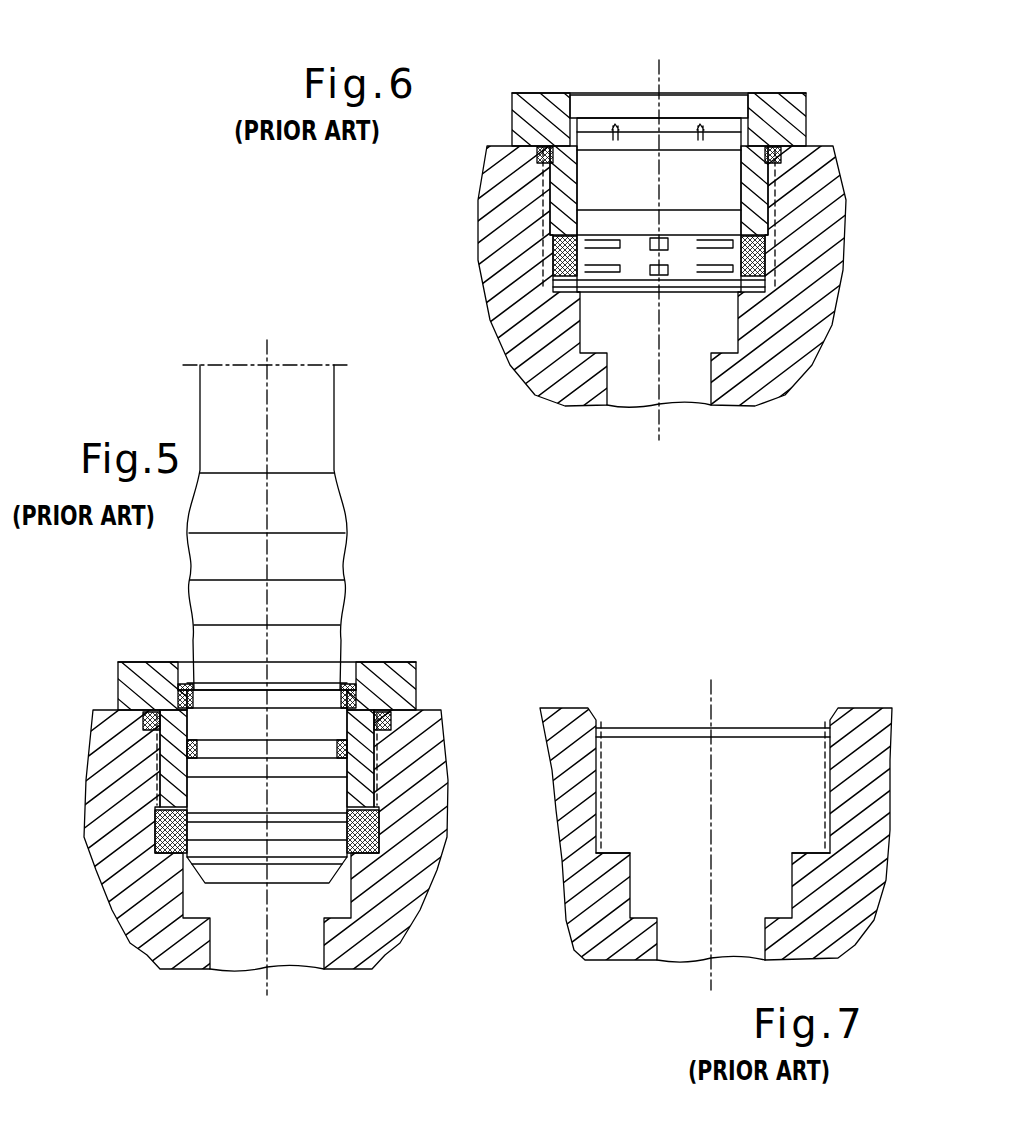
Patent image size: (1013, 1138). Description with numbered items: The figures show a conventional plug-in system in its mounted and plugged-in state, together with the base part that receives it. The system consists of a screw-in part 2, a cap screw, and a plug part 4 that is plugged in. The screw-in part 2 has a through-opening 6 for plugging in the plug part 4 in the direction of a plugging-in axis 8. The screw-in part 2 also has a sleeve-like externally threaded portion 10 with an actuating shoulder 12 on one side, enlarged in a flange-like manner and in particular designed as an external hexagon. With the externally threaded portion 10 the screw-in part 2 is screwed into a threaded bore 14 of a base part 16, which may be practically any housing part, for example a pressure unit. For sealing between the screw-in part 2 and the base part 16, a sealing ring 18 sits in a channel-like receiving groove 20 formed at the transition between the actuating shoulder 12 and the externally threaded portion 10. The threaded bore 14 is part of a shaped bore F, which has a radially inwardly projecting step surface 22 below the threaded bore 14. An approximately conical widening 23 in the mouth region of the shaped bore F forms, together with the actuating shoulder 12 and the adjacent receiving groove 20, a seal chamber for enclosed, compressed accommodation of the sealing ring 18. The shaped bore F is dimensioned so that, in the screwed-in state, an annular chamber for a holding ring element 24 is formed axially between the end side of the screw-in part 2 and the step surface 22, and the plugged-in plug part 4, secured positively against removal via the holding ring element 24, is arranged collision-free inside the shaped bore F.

In FIG. 6, the screw-in part 2 is at (510, 118).
In FIG. 5, the screw-in part 2 is at (409, 655).
In FIG. 5, the plug part 4 is at (212, 660).
In FIG. 6, the through-opening 6 is at (677, 173).
In FIG. 5, the through-opening 6 is at (330, 772).
In FIG. 6, the plugging-in axis 8 is at (663, 80).
In FIG. 5, the plugging-in axis 8 is at (273, 725).
In FIG. 7, the plugging-in axis 8 is at (708, 700).
In FIG. 6, the externally threaded portion 10 is at (533, 205).
In FIG. 5, the externally threaded portion 10 is at (130, 712).
In FIG. 6, the actuating shoulder 12 is at (790, 102).
In FIG. 5, the actuating shoulder 12 is at (405, 684).
In FIG. 6, the threaded bore 14 is at (783, 207).
In FIG. 5, the threaded bore 14 is at (140, 712).
In FIG. 7, the threaded bore 14 is at (600, 775).
In FIG. 6, the base part 16 is at (507, 357).
In FIG. 5, the base part 16 is at (400, 917).
In FIG. 7, the base part 16 is at (853, 709).
In FIG. 6, the sealing ring 18 is at (532, 98).
In FIG. 5, the sealing ring 18 is at (368, 698).
In FIG. 6, the receiving groove 20 is at (557, 142).
In FIG. 5, the receiving groove 20 is at (385, 698).
In FIG. 7, the step surface 22 is at (620, 840).
In FIG. 6, the conical widening 23 is at (537, 157).
In FIG. 5, the conical widening 23 is at (393, 722).
In FIG. 7, the conical widening 23 is at (830, 722).
In FIG. 6, the holding ring element 24 is at (547, 275).
In FIG. 5, the holding ring element 24 is at (373, 827).
In FIG. 6, the shaped bore F is at (713, 315).
In FIG. 5, the shaped bore F is at (307, 900).
In FIG. 7, the shaped bore F is at (752, 780).